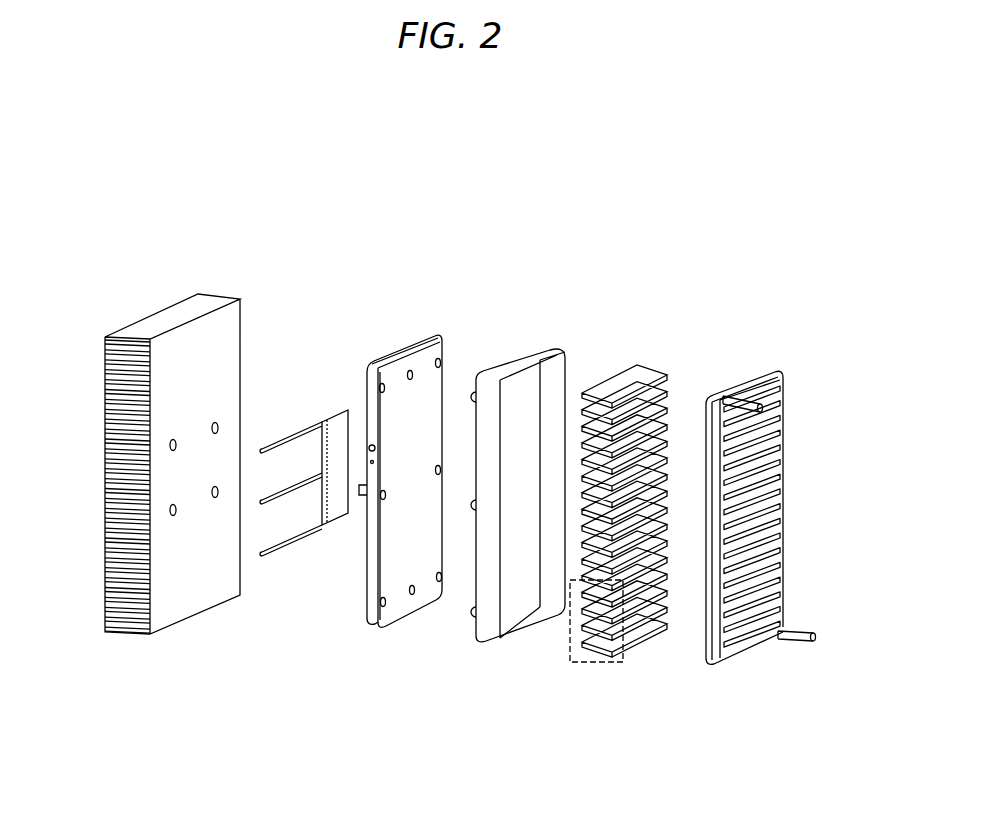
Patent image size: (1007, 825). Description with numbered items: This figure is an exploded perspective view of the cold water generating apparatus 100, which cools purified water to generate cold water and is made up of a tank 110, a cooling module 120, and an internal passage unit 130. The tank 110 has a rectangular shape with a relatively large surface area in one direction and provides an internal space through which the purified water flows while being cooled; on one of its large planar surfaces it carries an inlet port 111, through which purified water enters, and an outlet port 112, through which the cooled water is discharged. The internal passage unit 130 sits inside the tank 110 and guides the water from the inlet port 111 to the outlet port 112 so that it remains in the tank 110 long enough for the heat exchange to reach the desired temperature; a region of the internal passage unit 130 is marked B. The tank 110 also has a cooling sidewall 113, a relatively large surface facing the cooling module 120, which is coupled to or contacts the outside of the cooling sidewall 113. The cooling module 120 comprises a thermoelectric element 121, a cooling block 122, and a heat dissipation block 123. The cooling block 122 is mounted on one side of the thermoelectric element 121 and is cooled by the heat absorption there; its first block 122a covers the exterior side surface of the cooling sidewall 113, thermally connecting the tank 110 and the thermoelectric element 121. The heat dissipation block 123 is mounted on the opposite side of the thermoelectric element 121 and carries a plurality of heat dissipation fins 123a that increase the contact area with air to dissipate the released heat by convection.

The cold water generating apparatus 100 is at (145, 288).
The tank 110 is at (727, 383).
The inlet port 111 is at (814, 641).
The outlet port 112 is at (784, 406).
The cooling sidewall 113 is at (515, 600).
The cooling module 120 is at (239, 518).
The thermoelectric element 121 is at (330, 523).
The cooling block 122 is at (394, 496).
The first block 122a is at (420, 360).
The heat dissipation block 123 is at (148, 504).
The heat dissipation fins 123a is at (110, 423).
The internal passage unit 130 is at (652, 625).
The detail region B is at (583, 663).